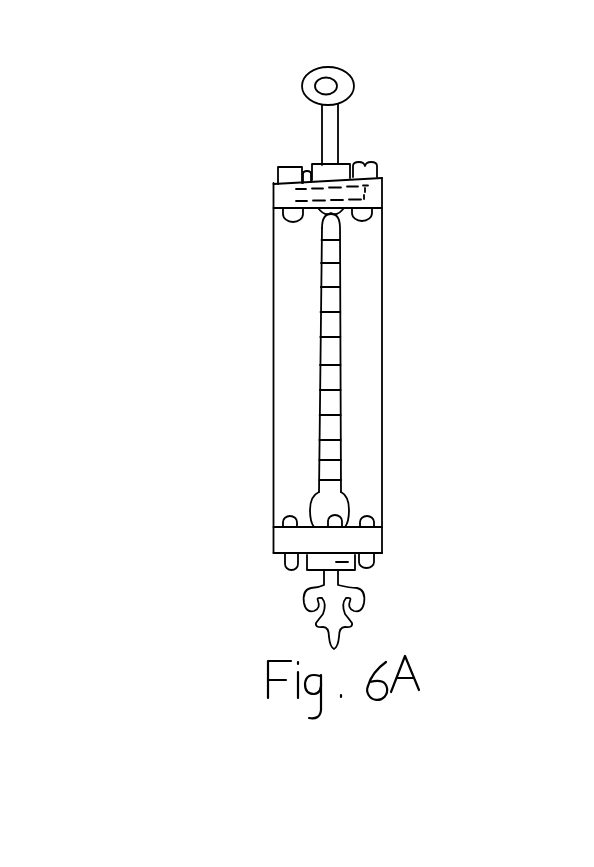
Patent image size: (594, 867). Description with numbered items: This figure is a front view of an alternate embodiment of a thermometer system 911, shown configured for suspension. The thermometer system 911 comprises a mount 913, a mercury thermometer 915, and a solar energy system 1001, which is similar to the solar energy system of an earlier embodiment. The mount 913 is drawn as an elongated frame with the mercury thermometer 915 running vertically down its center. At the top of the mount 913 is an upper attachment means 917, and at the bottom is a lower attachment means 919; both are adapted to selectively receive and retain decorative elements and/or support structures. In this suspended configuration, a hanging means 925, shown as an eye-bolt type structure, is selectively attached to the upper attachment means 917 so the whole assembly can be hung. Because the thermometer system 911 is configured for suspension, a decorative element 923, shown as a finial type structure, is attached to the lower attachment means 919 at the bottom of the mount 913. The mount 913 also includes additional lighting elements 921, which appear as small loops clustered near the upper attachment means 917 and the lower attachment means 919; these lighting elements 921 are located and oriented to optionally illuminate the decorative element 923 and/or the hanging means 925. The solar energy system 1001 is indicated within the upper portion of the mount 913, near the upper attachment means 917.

The thermometer system 911 is at (364, 342).
The mount 913 is at (493, 207).
The mercury thermometer 915 is at (348, 356).
The upper attachment means 917 is at (316, 151).
The lower attachment means 919 is at (364, 565).
The lighting elements 921 is at (308, 164).
The decorative element 923 is at (305, 605).
The hanging means 925 is at (352, 74).
The solar energy system 1001 is at (297, 197).